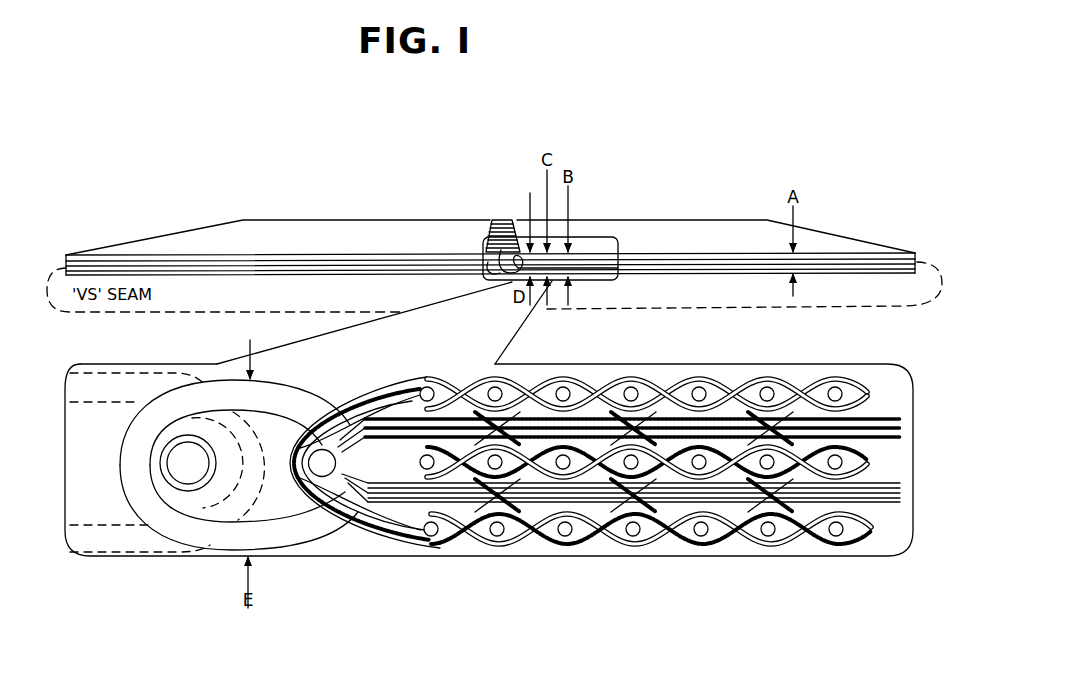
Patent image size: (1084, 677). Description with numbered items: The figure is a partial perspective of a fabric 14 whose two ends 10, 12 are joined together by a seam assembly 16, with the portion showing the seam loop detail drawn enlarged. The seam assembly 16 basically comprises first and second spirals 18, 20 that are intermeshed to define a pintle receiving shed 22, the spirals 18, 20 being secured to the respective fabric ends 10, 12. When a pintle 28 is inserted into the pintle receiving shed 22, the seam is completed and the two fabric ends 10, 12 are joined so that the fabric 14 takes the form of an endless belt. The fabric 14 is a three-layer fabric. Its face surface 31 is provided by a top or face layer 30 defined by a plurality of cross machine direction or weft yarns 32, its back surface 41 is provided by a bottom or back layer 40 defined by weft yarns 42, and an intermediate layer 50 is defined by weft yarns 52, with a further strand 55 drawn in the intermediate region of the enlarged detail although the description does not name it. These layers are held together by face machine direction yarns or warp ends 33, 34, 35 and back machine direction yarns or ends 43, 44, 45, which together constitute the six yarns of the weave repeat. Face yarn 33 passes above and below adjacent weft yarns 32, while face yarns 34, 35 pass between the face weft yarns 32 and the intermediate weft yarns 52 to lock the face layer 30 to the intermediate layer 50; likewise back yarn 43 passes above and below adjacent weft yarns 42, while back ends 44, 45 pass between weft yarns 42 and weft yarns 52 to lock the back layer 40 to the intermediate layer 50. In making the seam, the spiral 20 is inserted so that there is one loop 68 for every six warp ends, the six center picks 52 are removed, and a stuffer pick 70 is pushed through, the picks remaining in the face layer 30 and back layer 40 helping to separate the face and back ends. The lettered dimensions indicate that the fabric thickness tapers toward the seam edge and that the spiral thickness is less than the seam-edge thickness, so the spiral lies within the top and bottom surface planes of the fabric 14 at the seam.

The fabric end 10 is at (468, 200).
The fabric end 12 is at (513, 210).
The fabric 14 is at (272, 232).
The seam assembly 16 is at (494, 205).
The first spiral 18 is at (491, 272).
The second spiral 20 is at (497, 251).
The pintle receiving shed 22 is at (184, 503).
The pintle 28 is at (183, 462).
The face layer 30 is at (660, 462).
The face surface 31 is at (701, 242).
The weft yarns 32 is at (429, 392).
The face machine direction yarn 33 is at (391, 417).
The face machine direction yarn 34 is at (373, 396).
The face machine direction yarn 35 is at (480, 541).
The back layer 40 is at (884, 528).
The back surface 41 is at (529, 543).
The weft yarns 42 is at (434, 535).
The back machine direction yarn 43 is at (380, 532).
The back machine direction yarn 44 is at (362, 538).
The back machine direction yarn 45 is at (406, 516).
The intermediate layer 50 is at (689, 471).
The weft yarns 52 is at (447, 472).
The plain strand 55 is at (652, 415).
The loop 68 is at (283, 538).
The stuffer pick 70 is at (318, 465).